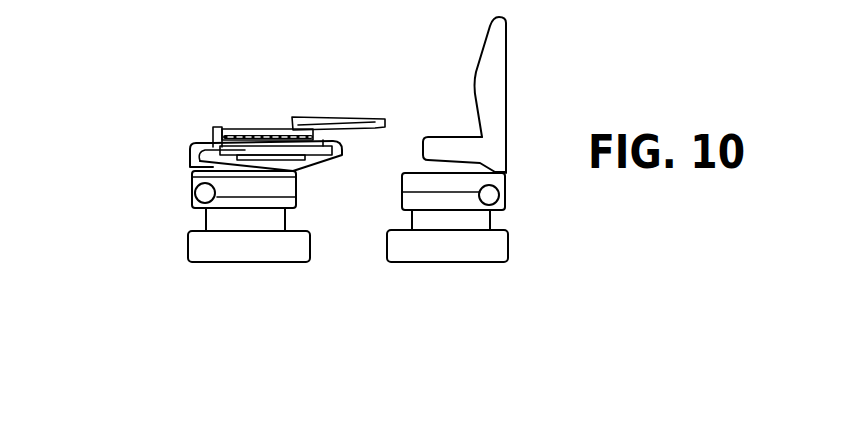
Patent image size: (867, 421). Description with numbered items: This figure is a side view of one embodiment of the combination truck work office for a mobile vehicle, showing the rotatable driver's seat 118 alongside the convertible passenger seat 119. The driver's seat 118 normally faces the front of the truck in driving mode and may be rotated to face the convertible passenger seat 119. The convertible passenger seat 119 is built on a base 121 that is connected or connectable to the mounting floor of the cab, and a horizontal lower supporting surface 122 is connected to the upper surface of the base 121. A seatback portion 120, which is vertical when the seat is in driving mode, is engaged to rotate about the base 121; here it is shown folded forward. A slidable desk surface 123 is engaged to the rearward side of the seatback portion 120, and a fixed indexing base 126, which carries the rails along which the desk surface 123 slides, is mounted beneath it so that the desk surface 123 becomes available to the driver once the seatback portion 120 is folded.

The rotatable driver's seat 118 is at (506, 83).
The convertible passenger seat 119 is at (192, 207).
The seatback portion 120 is at (308, 163).
The base 121 is at (275, 223).
The horizontal lower supporting surface 122 is at (251, 182).
The desk surface 123 is at (360, 118).
The fixed indexing base 126 is at (220, 128).